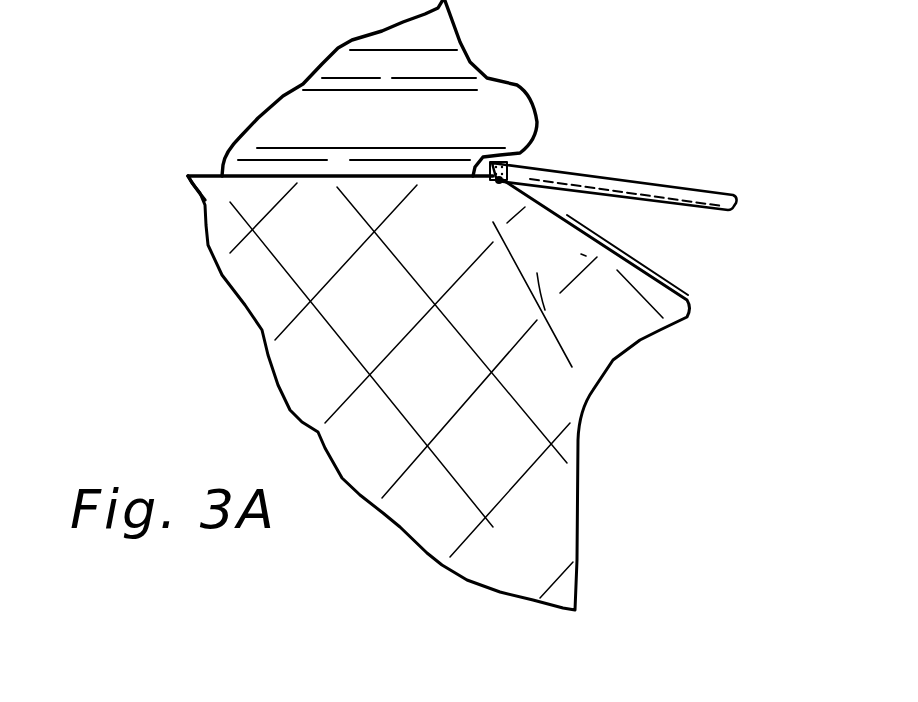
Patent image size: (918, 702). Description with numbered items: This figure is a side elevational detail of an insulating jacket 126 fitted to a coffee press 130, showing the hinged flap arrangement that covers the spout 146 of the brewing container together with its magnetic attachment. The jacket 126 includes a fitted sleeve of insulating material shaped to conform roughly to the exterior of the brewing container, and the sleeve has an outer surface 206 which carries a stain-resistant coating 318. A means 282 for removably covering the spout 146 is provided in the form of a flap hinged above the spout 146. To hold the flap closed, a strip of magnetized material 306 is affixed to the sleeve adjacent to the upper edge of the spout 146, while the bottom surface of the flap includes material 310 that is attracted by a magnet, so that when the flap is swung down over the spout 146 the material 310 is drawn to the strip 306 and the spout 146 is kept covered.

The means for removably covering the spout 282 is at (562, 172).
The material attracted by a magnet 310 is at (700, 210).
The strip of magnetized material 306 is at (668, 288).
The spout 146 is at (623, 310).
The coffee press 130 is at (593, 520).
The insulating jacket 126 is at (380, 317).
The stain-resistant coating 318 is at (500, 320).
The outer surface 206 is at (446, 392).